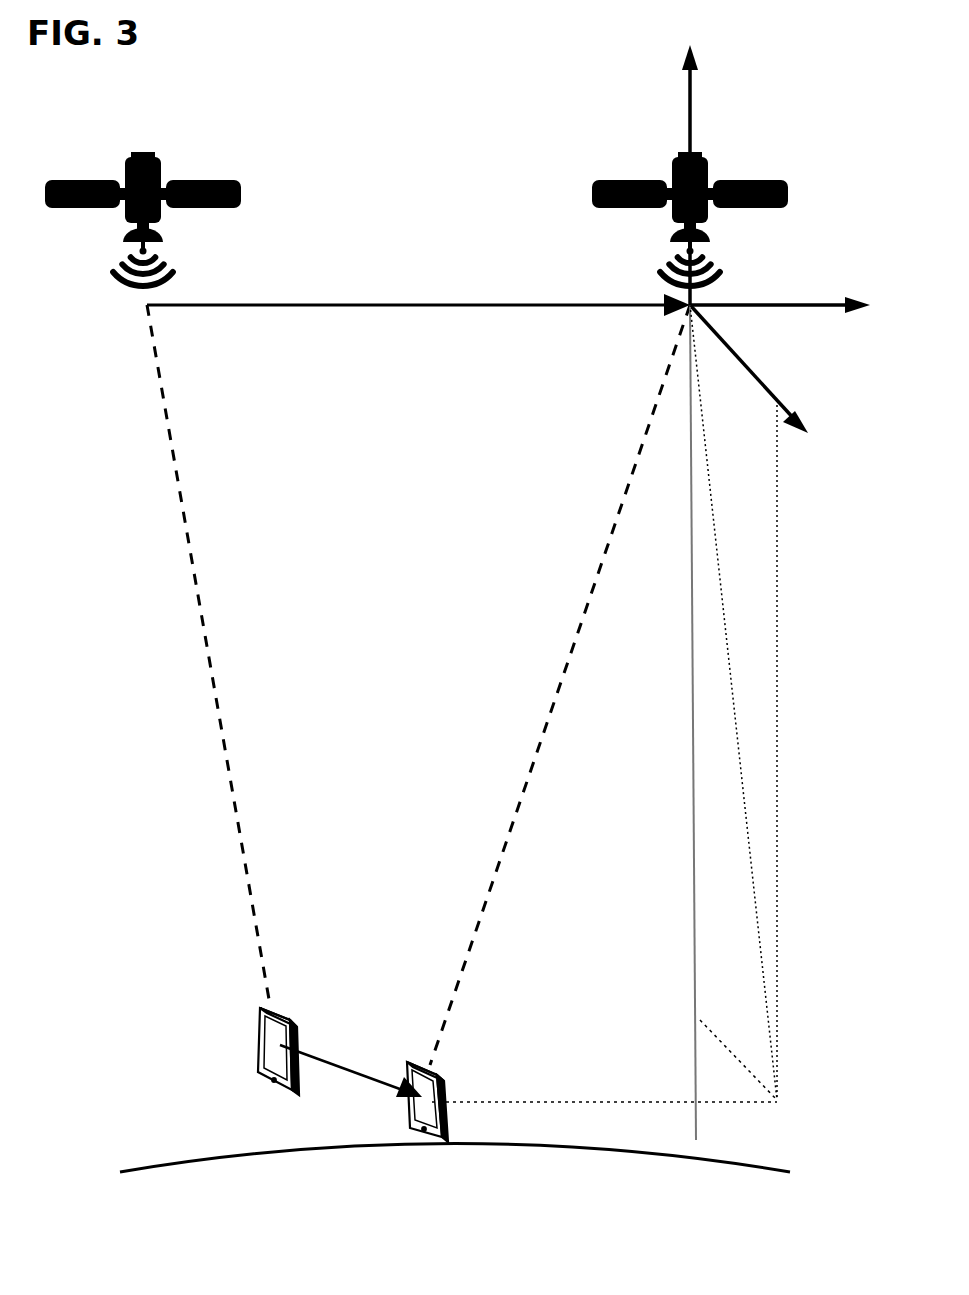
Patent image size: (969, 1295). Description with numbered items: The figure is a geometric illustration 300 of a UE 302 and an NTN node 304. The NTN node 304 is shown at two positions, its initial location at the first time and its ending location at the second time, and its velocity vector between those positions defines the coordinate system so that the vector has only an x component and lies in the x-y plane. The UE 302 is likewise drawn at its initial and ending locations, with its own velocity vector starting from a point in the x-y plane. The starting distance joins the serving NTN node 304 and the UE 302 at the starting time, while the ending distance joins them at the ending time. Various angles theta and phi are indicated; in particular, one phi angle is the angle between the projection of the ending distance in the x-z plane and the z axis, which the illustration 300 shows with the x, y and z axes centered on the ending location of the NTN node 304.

The geometric illustration 300 is at (795, 67).
The UE 302 is at (265, 1062).
The NTN node 304 is at (746, 143).